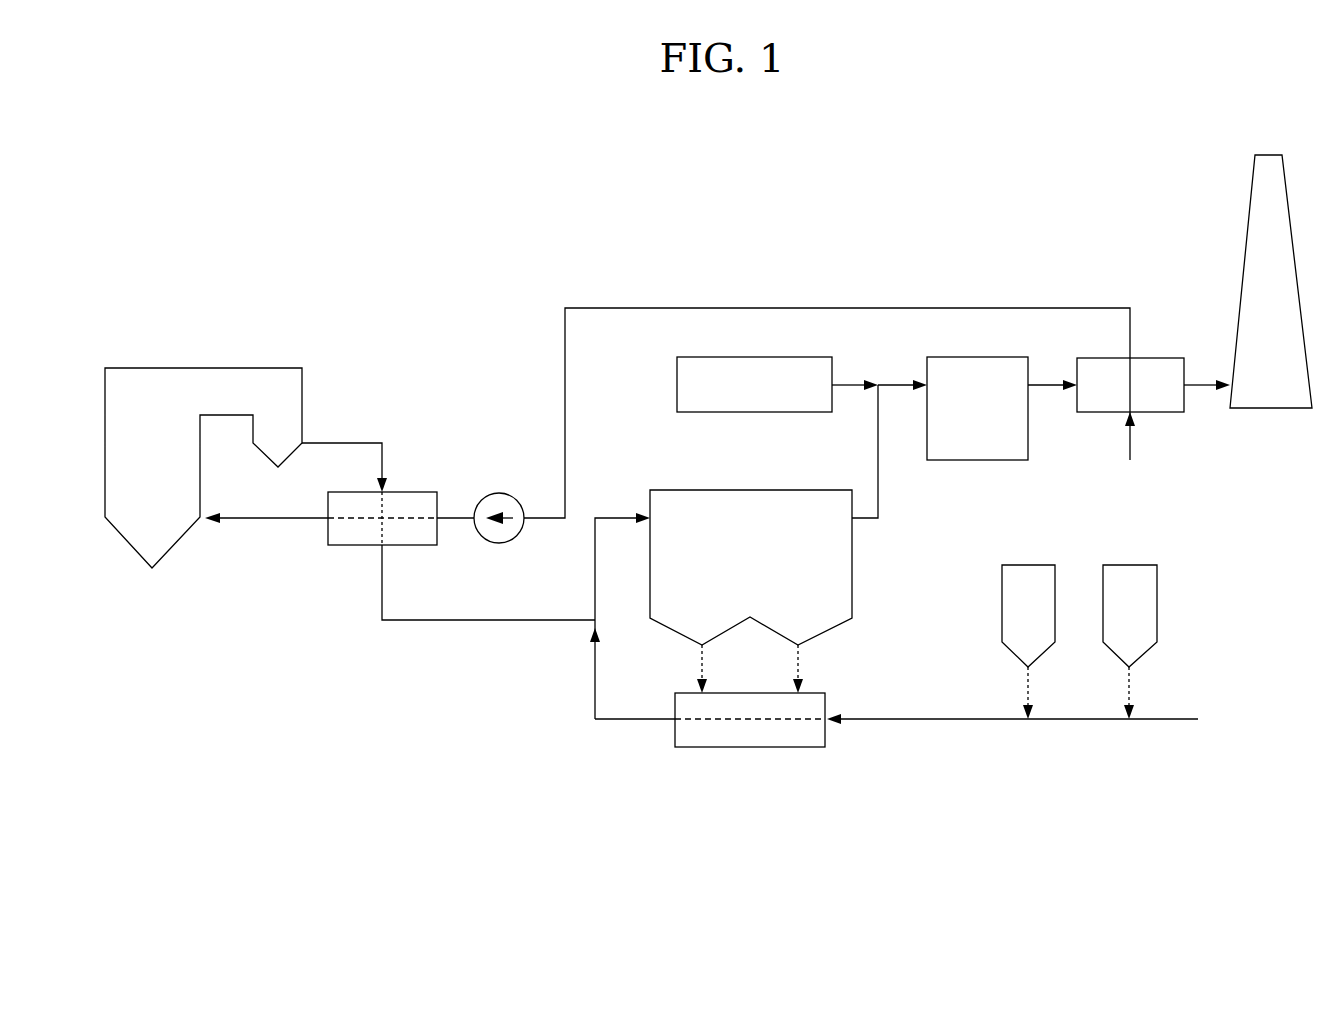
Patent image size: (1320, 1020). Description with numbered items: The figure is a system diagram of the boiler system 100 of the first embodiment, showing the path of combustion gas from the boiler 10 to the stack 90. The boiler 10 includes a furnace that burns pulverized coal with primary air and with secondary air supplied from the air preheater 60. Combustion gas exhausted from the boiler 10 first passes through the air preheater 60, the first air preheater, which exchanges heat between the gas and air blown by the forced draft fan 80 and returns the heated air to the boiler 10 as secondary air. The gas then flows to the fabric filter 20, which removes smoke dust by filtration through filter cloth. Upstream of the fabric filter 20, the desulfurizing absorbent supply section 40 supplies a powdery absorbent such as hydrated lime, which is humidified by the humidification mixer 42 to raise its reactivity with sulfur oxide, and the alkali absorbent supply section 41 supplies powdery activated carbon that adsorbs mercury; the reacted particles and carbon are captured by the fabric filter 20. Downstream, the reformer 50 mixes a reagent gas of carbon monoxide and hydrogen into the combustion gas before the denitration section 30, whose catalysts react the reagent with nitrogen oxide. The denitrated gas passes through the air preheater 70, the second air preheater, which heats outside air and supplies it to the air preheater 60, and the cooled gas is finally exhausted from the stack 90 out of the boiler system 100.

The boiler system 100 is at (303, 212).
The boiler 10 is at (200, 368).
The fabric filter 20 is at (852, 557).
The denitration section 30 is at (978, 460).
The desulfurizing absorbent supply section 40 is at (1002, 603).
The alkali absorbent supply section 41 is at (1157, 600).
The humidification mixer 42 is at (750, 747).
The reformer 50 is at (752, 412).
The air preheater 60 is at (413, 492).
The air preheater 70 is at (1165, 358).
The forced draft fan 80 is at (500, 493).
The stack 90 is at (1272, 410).